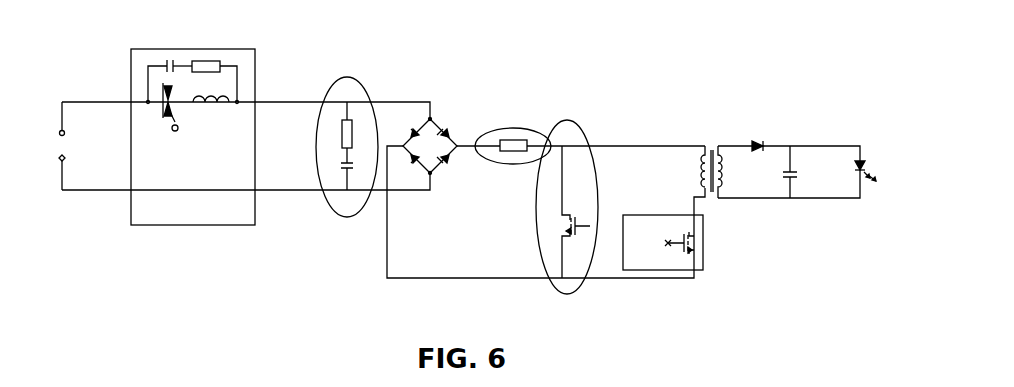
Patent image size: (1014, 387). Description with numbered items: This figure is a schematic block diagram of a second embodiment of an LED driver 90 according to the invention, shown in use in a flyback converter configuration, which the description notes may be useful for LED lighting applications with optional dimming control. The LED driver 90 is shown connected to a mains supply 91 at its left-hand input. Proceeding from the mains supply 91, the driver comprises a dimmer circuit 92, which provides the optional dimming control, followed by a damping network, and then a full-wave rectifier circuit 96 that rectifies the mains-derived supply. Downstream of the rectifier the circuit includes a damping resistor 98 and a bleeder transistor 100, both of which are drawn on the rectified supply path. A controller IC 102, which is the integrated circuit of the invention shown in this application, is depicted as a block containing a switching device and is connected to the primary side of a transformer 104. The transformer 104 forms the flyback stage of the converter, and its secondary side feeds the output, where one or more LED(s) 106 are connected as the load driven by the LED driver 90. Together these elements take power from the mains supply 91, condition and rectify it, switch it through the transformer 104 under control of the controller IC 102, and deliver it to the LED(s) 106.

The LED driver 90 is at (333, 251).
The mains supply 91 is at (62, 128).
The dimmer circuit 92 is at (255, 67).
The full-wave rectifier circuit 96 is at (437, 121).
The damping resistor 98 is at (527, 145).
The bleeder transistor 100 is at (577, 232).
The controller IC 102 is at (703, 258).
The transformer 104 is at (706, 157).
The LED(s) 106 is at (862, 163).